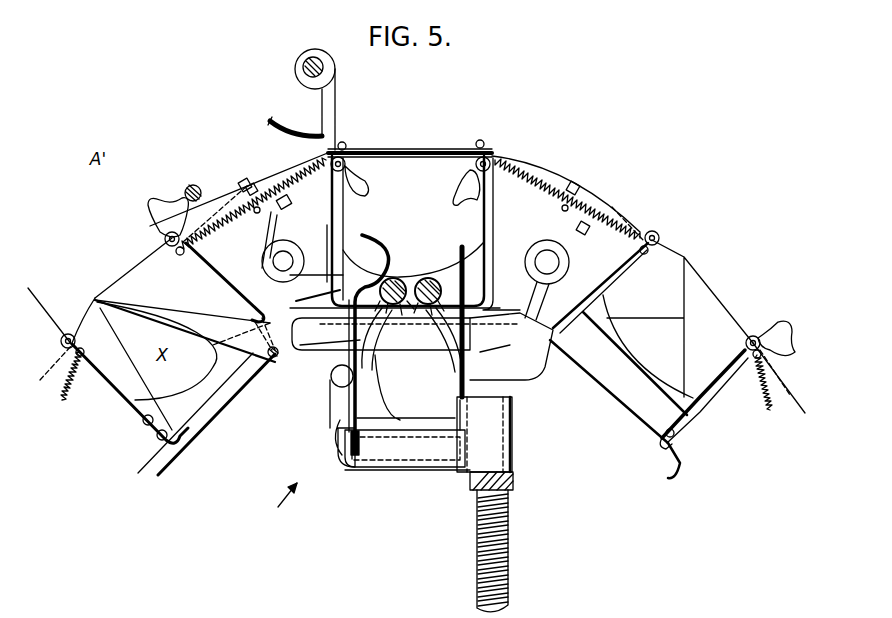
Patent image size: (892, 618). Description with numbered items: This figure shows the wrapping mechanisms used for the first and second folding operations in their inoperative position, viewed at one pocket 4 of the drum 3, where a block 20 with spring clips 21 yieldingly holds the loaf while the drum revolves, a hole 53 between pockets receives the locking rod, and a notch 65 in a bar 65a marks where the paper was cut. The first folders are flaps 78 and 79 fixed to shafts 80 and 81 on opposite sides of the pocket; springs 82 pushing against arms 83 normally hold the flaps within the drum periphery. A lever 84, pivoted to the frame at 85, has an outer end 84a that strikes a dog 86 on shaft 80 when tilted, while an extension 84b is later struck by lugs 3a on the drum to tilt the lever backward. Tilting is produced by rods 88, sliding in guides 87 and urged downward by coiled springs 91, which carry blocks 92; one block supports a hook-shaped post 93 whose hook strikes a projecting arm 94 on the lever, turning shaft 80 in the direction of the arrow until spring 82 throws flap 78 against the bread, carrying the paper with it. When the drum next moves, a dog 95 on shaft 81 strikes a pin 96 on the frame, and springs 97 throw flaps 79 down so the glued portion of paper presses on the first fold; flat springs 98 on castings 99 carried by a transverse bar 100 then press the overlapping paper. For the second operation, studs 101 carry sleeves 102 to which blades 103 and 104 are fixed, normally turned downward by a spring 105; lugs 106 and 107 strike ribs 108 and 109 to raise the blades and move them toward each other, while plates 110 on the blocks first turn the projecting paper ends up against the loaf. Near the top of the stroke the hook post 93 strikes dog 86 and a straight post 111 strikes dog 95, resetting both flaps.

The drum 3 is at (206, 414).
The lug 3a is at (290, 204).
The pocket 4 is at (130, 392).
The block 20 is at (394, 386).
The spring clip 21 is at (494, 220).
The hole 53 is at (560, 262).
The notch 65 is at (245, 181).
The bar 65a is at (253, 186).
The flap 78 is at (375, 150).
The flap 79 is at (455, 150).
The shaft 80 is at (64, 335).
The shaft 81 is at (165, 240).
The spring 82 is at (249, 226).
The arm 83 is at (343, 141).
The lever 84 is at (268, 362).
The outer end of lever 84a is at (100, 296).
The extension 84b is at (262, 270).
The pivot 85 is at (280, 362).
The dog 86 is at (372, 182).
The guide 87 is at (515, 486).
The rod 88 is at (509, 552).
The coiled spring 91 is at (509, 530).
The block 92 is at (407, 450).
The hook-shaped post 93 is at (338, 428).
The projecting arm 94 is at (321, 275).
The dog 95 is at (163, 200).
The pin 96 is at (190, 185).
The spring 97 is at (252, 208).
The flat spring 98 is at (418, 150).
The casting 99 is at (322, 100).
The transverse bar 100 is at (302, 68).
The stud 101 is at (398, 274).
The sleeve 102 is at (414, 322).
The blade 103 is at (511, 346).
The blade 104 is at (300, 322).
The spring 105 is at (418, 360).
The lug 106 is at (332, 390).
The lug 107 is at (497, 398).
The rib 108 is at (342, 350).
The rib 109 is at (490, 376).
The plate 110 is at (395, 392).
The straight post 111 is at (450, 262).